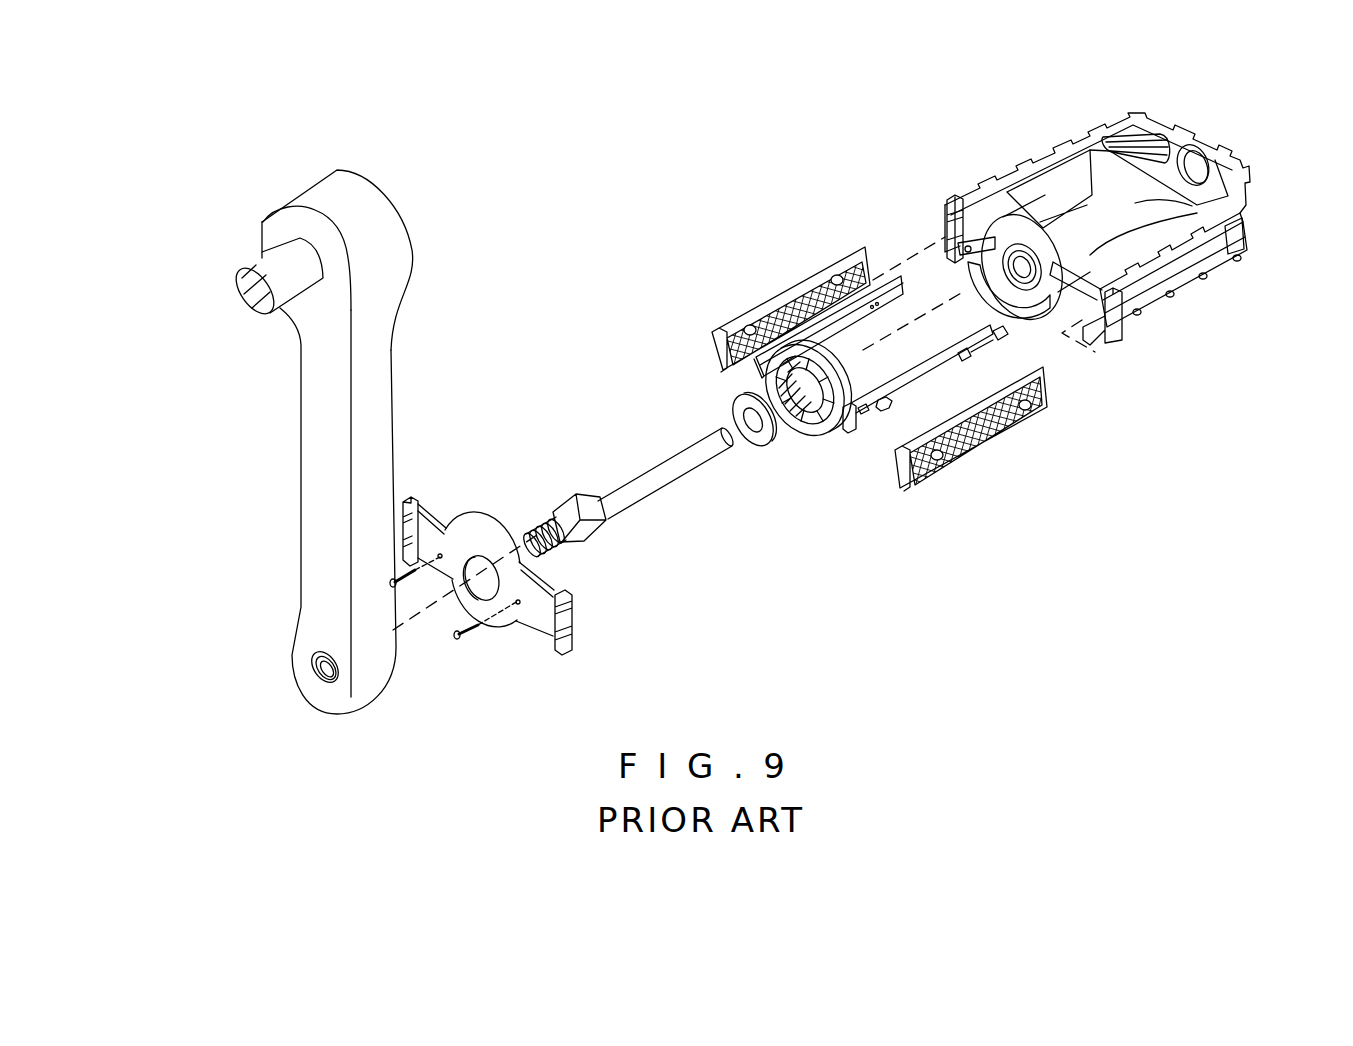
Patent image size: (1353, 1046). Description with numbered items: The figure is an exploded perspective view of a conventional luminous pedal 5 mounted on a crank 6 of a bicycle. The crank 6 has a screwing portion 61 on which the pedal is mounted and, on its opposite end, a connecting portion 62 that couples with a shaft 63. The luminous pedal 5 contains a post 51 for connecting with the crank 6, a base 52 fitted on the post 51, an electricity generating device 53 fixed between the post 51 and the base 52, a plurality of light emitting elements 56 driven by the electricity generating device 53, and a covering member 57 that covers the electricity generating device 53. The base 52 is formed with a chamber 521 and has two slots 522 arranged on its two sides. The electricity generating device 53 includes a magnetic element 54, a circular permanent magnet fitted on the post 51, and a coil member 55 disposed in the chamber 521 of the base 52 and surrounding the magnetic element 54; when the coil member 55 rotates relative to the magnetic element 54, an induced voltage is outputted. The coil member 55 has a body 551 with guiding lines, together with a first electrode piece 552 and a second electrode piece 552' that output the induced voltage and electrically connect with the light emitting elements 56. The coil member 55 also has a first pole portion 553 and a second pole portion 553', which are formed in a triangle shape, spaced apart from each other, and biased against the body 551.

The luminous pedal 5 is at (822, 238).
The crank 6 is at (266, 433).
The post 51 is at (622, 487).
The base 52 is at (1040, 148).
The electricity generating device 53 is at (795, 458).
The magnetic element 54 is at (733, 410).
The coil member 55 is at (840, 427).
The light emitting elements 56 is at (883, 403).
The covering member 57 is at (537, 627).
The screwing portion 61 is at (373, 675).
The connecting portion 62 is at (285, 230).
The shaft 63 is at (262, 260).
The chamber 521 is at (1008, 242).
The slots 522 is at (942, 230).
The body 551 is at (847, 373).
The first electrode piece 552 is at (805, 427).
The second electrode piece 552' is at (810, 316).
The first pole portion 553 is at (778, 421).
The second pole portion 553' is at (733, 386).